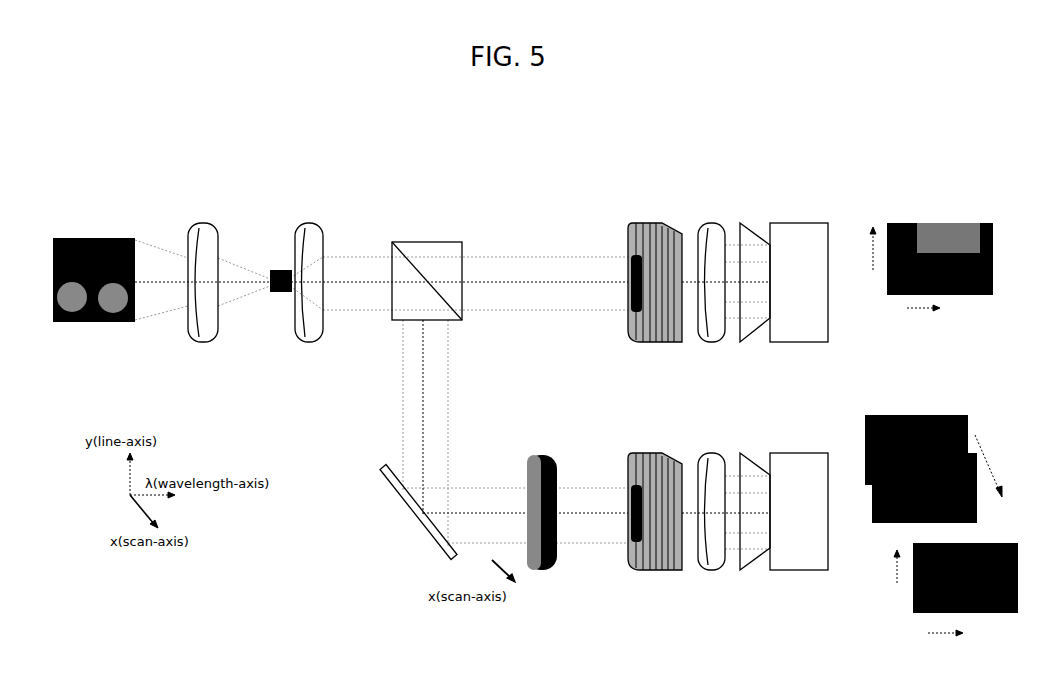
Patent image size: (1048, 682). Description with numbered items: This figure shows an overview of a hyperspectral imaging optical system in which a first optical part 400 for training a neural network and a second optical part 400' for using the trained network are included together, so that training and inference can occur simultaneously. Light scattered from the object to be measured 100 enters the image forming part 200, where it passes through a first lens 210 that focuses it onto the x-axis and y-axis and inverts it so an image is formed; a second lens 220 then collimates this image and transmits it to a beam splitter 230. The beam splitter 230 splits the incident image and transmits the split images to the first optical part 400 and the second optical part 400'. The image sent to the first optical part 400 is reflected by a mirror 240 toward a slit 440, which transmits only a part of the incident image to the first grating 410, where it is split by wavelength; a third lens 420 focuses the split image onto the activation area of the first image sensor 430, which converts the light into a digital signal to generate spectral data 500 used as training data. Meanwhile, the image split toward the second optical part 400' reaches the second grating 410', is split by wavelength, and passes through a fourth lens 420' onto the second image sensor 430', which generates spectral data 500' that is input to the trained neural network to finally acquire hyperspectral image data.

The object to be measured 100 is at (89, 238).
The image forming part 200 is at (460, 160).
The first lens 210 is at (201, 223).
The second lens 220 is at (307, 223).
The beam splitter 230 is at (421, 242).
The mirror 240 is at (402, 504).
The first optical part 400 is at (677, 564).
The first grating 410 is at (655, 538).
The third lens 420 is at (713, 538).
The first image sensor 430 is at (784, 538).
The slit 440 is at (542, 571).
The spectral data 500 is at (941, 504).
The second optical part 400' is at (728, 230).
The second grating 410' is at (655, 257).
The fourth lens 420' is at (714, 257).
The second image sensor 430' is at (784, 257).
The spectral data 500' is at (930, 244).